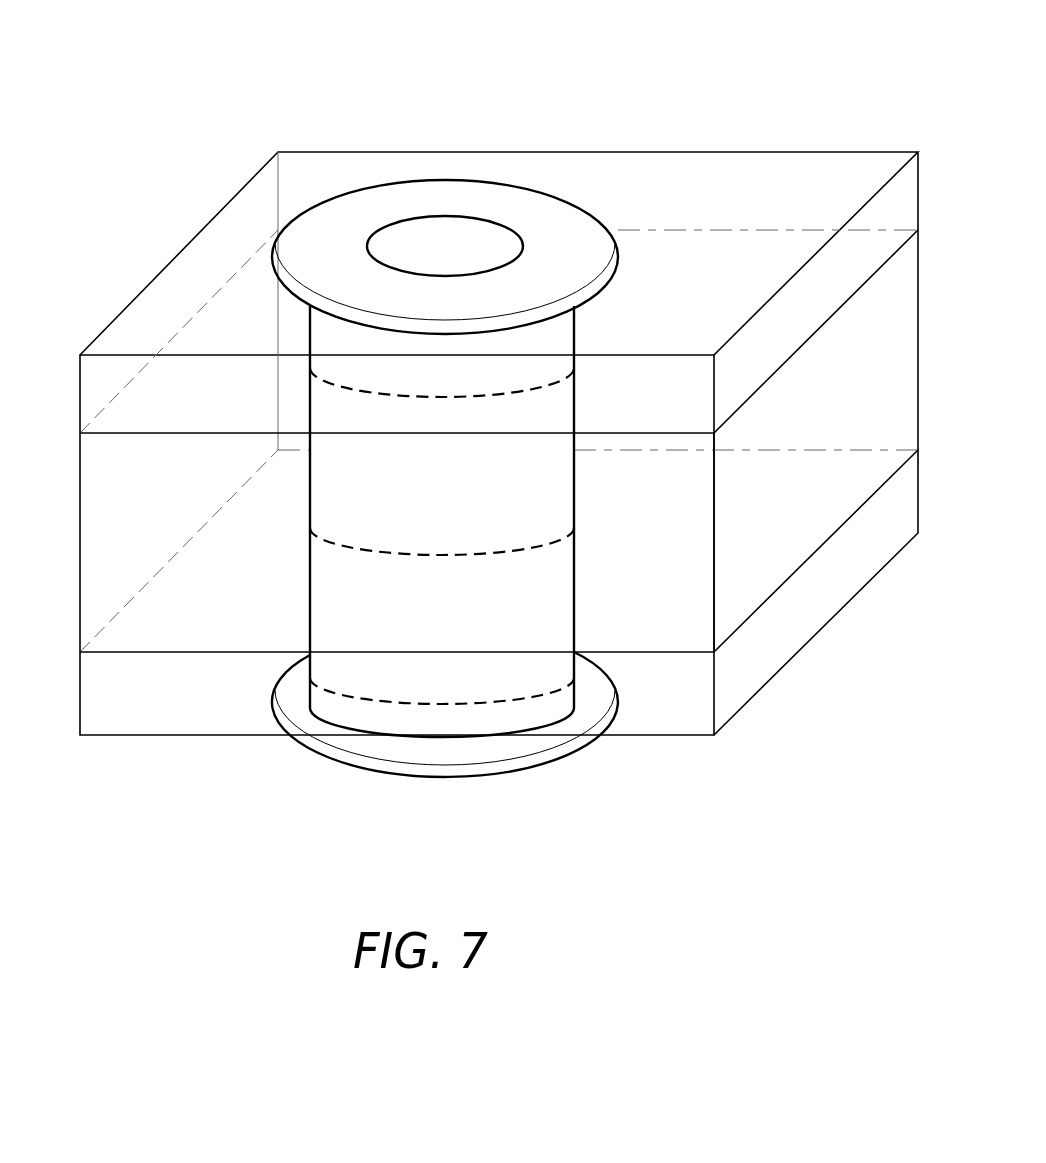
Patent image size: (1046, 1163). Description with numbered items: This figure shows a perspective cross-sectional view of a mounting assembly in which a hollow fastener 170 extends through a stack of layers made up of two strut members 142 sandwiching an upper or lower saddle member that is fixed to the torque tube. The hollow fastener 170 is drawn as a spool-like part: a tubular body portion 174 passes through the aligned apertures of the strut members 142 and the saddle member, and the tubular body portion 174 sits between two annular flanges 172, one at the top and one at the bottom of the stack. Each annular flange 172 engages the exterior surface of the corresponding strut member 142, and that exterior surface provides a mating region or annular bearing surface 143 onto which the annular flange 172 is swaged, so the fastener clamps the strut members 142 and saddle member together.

The hollow fastener 170 is at (475, 100).
The annular flange 172 is at (557, 242).
The annular bearing surface 143 is at (290, 301).
The strut member 142 is at (499, 426).
The tubular body portion 174 is at (430, 443).